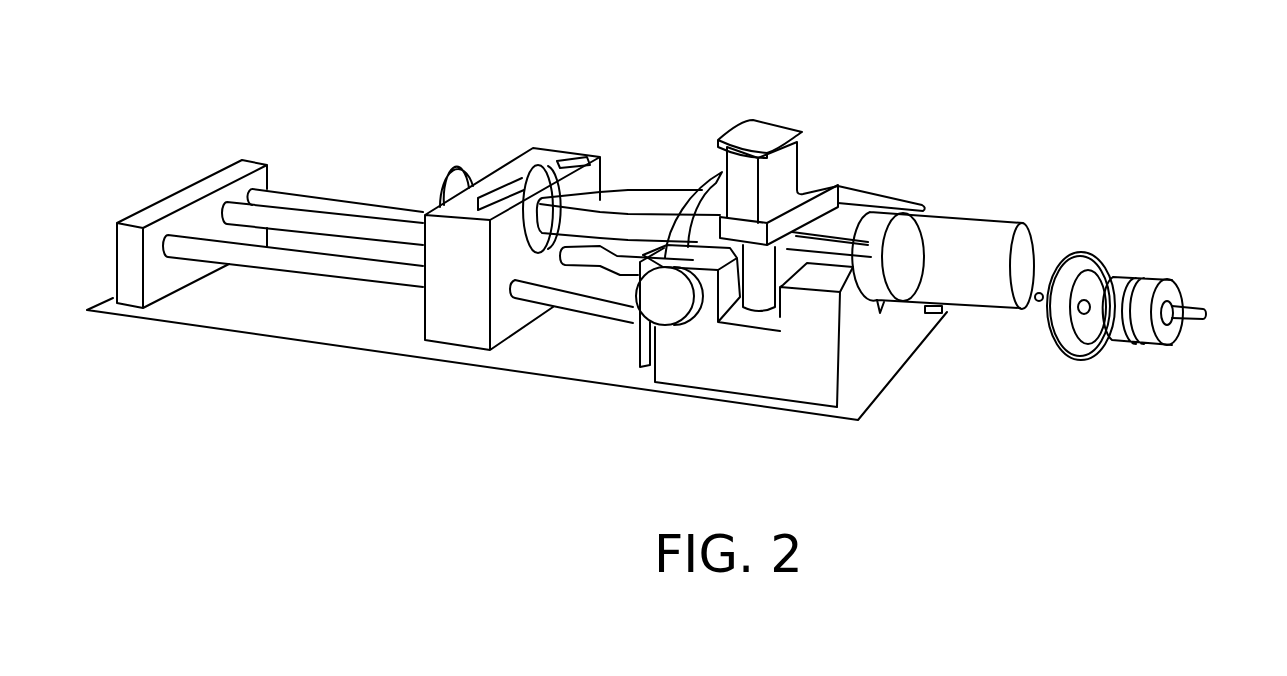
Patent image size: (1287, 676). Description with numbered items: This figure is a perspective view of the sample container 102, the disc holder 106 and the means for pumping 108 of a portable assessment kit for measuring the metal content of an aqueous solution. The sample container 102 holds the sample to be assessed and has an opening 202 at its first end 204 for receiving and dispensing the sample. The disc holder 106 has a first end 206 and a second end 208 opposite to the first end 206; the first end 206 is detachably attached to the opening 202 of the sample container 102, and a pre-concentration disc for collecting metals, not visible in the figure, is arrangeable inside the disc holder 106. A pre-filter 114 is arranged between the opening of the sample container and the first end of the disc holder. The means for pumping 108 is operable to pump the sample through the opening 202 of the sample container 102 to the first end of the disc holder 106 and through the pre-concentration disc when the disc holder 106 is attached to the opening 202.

The sample container 102 is at (959, 209).
The disc holder 106 is at (1166, 356).
The means for pumping 108 is at (219, 156).
The pre-filter 114 is at (1090, 360).
The opening 202 is at (1041, 305).
The first end 204 is at (1027, 226).
The first end 206 is at (1103, 254).
The second end 208 is at (1192, 298).